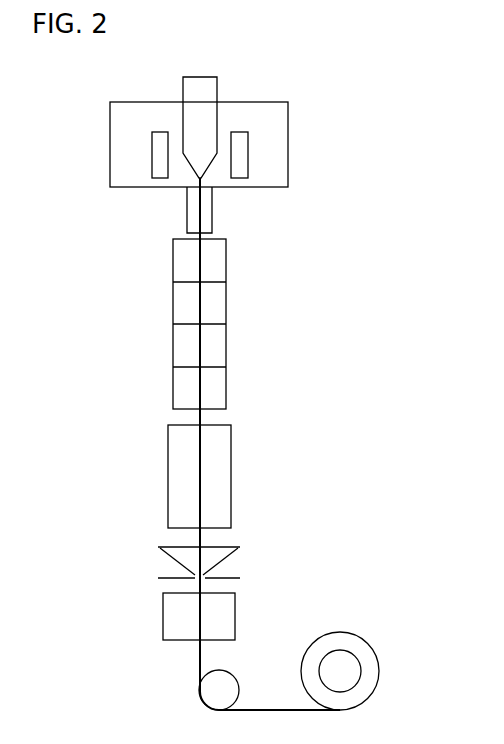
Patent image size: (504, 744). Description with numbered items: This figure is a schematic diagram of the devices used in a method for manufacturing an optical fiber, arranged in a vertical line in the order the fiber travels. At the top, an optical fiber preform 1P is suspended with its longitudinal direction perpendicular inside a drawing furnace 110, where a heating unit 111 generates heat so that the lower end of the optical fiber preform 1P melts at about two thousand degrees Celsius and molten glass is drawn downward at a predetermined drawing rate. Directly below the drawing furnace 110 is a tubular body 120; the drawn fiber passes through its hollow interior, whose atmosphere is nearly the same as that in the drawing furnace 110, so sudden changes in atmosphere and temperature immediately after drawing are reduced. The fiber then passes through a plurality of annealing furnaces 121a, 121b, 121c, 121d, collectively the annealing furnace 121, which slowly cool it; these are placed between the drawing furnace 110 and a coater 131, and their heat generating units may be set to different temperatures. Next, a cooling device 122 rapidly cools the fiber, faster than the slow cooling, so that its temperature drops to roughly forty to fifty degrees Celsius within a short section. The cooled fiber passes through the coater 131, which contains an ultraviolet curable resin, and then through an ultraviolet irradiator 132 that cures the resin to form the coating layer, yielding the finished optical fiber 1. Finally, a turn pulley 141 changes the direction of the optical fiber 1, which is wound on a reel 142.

The optical fiber 1 is at (202, 663).
The optical fiber preform 1P is at (200, 130).
The drawing furnace 110 is at (288, 115).
The heating unit 111 is at (240, 157).
The tubular body 120 is at (207, 215).
The annealing furnace 121 is at (270, 323).
The annealing furnace 121a is at (210, 262).
The annealing furnace 121b is at (212, 308).
The annealing furnace 121c is at (213, 349).
The annealing furnace 121d is at (265, 381).
The cooling device 122 is at (212, 460).
The coater 131 is at (212, 555).
The ultraviolet irradiator 132 is at (213, 607).
The turn pulley 141 is at (215, 681).
The reel 142 is at (338, 672).